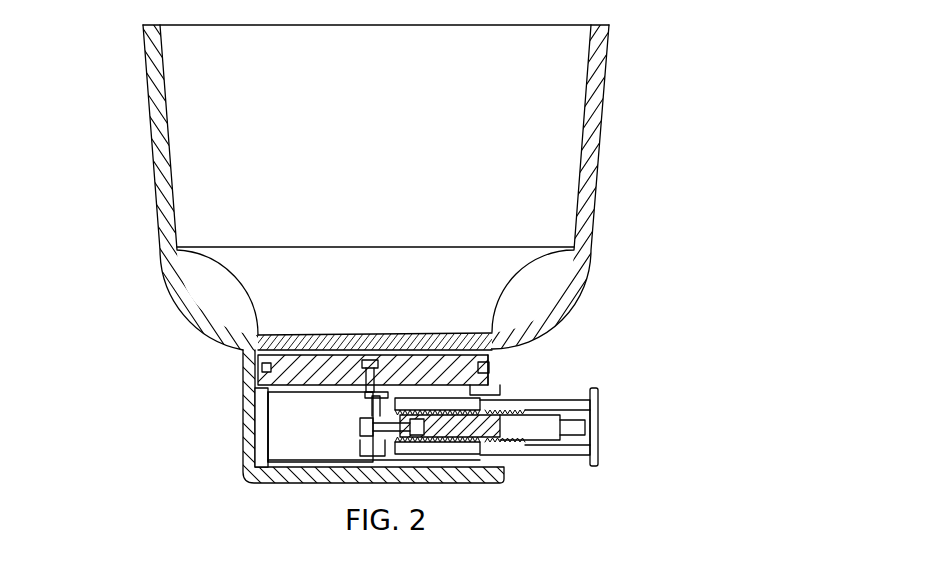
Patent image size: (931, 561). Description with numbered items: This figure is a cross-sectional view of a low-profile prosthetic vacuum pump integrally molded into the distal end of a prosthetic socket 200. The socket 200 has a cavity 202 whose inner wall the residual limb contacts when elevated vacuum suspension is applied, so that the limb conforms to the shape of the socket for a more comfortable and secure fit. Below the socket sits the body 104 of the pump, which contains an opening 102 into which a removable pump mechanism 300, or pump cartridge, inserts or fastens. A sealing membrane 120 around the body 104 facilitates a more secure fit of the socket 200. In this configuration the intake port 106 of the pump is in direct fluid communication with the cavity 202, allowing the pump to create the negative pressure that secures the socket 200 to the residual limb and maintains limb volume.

The prosthetic socket 200 is at (596, 123).
The cavity 202 is at (393, 199).
The body 104 is at (280, 377).
The intake port 106 is at (365, 368).
The sealing membrane 120 is at (486, 366).
The opening 102 is at (505, 395).
The removable pump mechanism 300 is at (558, 482).